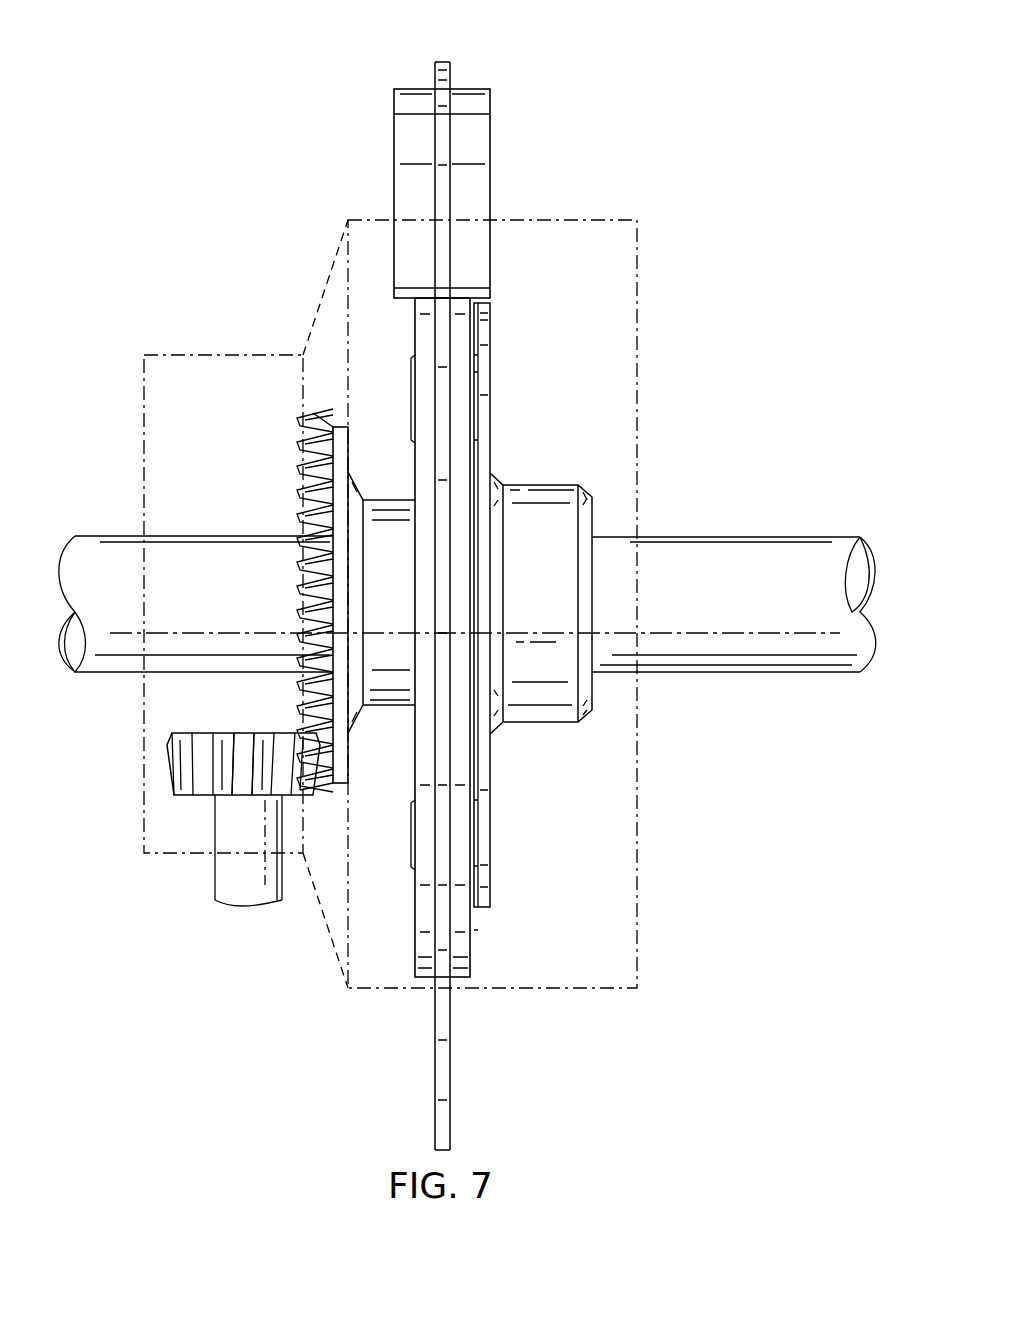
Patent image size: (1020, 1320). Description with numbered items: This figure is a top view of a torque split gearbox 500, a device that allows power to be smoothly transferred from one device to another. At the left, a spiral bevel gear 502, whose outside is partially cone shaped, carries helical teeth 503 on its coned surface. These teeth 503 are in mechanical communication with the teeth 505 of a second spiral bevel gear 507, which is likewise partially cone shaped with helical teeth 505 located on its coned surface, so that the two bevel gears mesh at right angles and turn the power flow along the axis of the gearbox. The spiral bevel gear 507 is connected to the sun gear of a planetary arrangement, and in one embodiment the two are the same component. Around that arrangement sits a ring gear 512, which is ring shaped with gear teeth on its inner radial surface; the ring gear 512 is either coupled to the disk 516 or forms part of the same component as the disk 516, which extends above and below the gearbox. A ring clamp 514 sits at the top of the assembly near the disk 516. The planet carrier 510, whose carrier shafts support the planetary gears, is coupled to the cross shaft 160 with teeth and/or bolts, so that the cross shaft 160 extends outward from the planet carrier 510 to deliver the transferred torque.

The torque split gearbox 500 is at (250, 62).
The cross shaft 160 is at (730, 537).
The spiral bevel gear 502 is at (165, 760).
The teeth 503 is at (222, 745).
The teeth 505 is at (296, 576).
The spiral bevel gear 507 is at (300, 470).
The planet carrier 510 is at (541, 485).
The ring gear 512 is at (476, 912).
The ring clamp 514 is at (492, 148).
The disk 516 is at (452, 72).